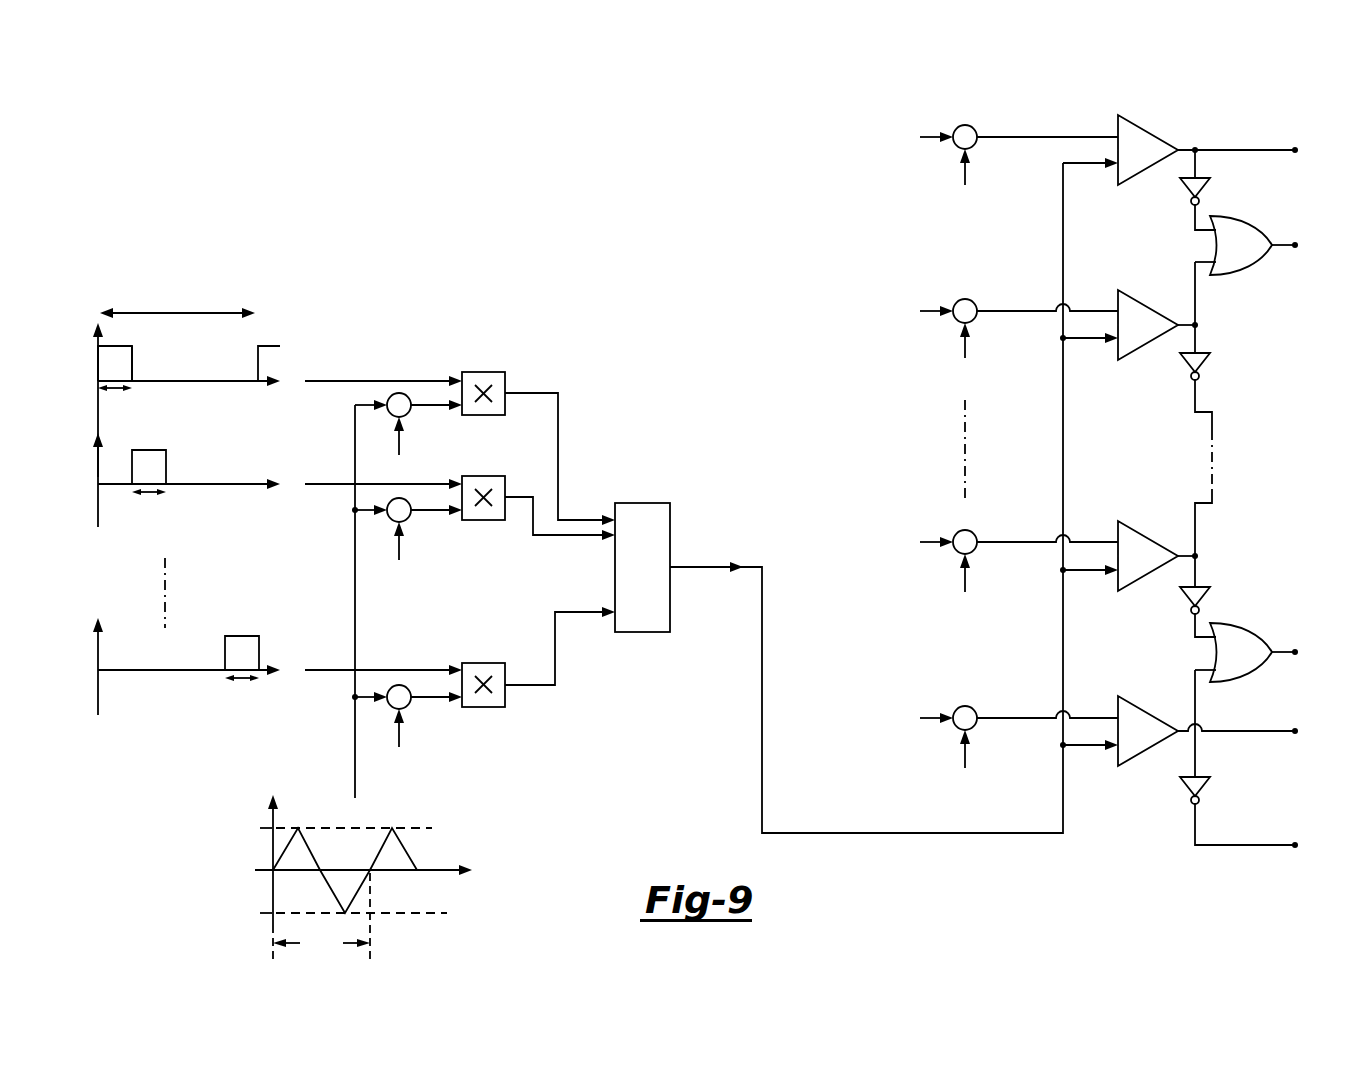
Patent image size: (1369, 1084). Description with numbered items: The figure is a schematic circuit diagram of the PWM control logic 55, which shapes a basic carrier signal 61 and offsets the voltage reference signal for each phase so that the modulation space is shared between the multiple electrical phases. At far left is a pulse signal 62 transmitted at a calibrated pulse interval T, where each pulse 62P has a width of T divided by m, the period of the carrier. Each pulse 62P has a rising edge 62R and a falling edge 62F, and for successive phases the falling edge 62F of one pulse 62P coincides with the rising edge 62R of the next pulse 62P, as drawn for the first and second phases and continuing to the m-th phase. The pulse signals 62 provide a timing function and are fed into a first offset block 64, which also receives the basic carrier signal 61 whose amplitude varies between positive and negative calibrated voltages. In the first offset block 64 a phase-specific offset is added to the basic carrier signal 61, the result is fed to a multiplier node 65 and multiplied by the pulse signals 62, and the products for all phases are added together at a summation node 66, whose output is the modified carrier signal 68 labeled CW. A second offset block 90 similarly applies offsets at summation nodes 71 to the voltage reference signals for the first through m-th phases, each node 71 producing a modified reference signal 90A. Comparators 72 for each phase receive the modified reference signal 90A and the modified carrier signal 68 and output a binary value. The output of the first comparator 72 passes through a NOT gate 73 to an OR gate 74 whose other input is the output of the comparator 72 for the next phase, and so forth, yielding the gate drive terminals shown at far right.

The PWM control logic 55 is at (1268, 75).
The basic carrier signal 61 is at (452, 800).
The pulse signal 62 is at (258, 273).
The rising edge 62R is at (97, 366).
The falling edge 62F is at (133, 362).
The pulse 62P is at (114, 366).
The first offset block 64 is at (513, 273).
The multiplier node 65 is at (483, 372).
The summation node 66 is at (643, 503).
The modified carrier signal 68 is at (752, 568).
The summation node 71 is at (972, 127).
The comparator 72 is at (1150, 128).
The NOT gate 73 is at (1185, 190).
The OR gate 74 is at (1245, 226).
The second offset block 90 is at (995, 93).
The modified reference signal 90A is at (1080, 137).